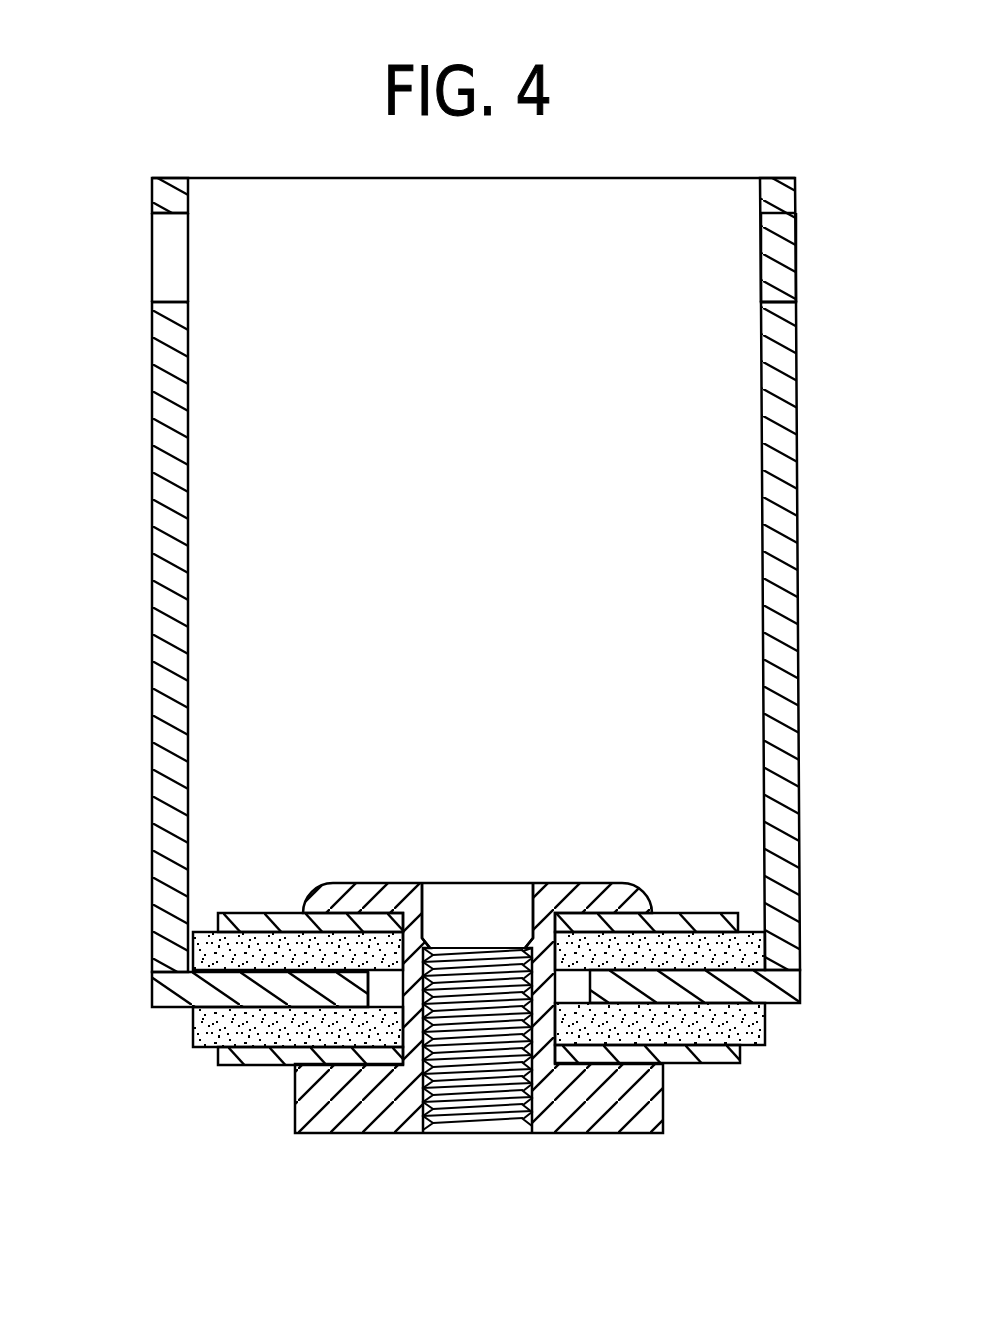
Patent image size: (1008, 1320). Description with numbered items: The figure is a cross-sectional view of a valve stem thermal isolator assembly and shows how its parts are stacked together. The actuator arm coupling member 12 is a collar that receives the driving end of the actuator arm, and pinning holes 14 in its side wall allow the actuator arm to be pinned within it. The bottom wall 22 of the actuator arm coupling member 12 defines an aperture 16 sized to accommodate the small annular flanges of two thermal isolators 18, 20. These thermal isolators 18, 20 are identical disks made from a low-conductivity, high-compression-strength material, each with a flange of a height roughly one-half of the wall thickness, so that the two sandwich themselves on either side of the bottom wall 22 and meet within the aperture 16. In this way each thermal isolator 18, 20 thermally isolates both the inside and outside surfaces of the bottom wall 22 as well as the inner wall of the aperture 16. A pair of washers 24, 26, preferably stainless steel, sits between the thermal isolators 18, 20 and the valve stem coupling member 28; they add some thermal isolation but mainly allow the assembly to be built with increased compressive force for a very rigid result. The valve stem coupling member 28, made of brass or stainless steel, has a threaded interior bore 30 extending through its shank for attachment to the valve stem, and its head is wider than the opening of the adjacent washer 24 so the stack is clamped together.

The actuator arm coupling member 12 is at (153, 744).
The pinning holes 14 is at (165, 268).
The aperture 16 is at (383, 983).
The thermal isolator 18 is at (750, 1027).
The thermal isolator 20 is at (748, 928).
The bottom wall 22 is at (268, 988).
The washer 24 is at (708, 1067).
The washer 26 is at (688, 912).
The valve stem coupling member 28 is at (592, 883).
The interior bore 30 is at (473, 1133).